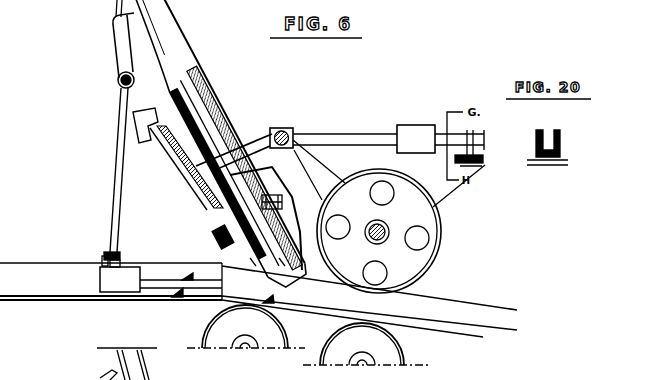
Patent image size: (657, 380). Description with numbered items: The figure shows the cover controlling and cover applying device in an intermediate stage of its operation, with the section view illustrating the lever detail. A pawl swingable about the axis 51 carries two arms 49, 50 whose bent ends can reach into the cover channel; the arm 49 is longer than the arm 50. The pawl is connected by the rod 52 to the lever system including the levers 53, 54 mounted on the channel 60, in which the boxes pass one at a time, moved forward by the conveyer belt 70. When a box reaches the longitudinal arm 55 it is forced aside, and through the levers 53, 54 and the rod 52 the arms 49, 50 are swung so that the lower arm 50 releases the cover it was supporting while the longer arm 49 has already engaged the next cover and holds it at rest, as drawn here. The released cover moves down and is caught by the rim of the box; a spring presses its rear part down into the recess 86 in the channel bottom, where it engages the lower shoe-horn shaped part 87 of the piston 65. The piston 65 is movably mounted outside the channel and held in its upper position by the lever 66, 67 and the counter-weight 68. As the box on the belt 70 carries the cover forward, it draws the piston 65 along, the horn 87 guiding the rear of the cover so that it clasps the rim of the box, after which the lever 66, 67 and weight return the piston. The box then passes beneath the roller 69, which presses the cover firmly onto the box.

In FIG. 6, the pawl arm 49 is at (116, 62).
In FIG. 6, the pawl arm 50 is at (134, 112).
In FIG. 6, the pawl axis 51 is at (118, 84).
In FIG. 6, the rod 52 is at (121, 136).
In FIG. 6, the lever 53 is at (120, 254).
In FIG. 6, the lever 54 is at (104, 258).
In FIG. 6, the arm 55 is at (118, 282).
In FIG. 6, the channel 60 is at (85, 277).
In FIG. 6, the piston 65 is at (170, 159).
In FIG. 6, the lever 66 is at (263, 148).
In FIG. 6, the lever 67 is at (335, 141).
In FIG. 20, the lever 67 is at (556, 137).
In FIG. 6, the counter-weight 68 is at (415, 143).
In FIG. 6, the roller 69 is at (430, 225).
In FIG. 6, the conveyer belt 70 is at (62, 301).
In FIG. 6, the recess 86 is at (250, 262).
In FIG. 6, the shoe-horn shaped part 87 is at (279, 262).